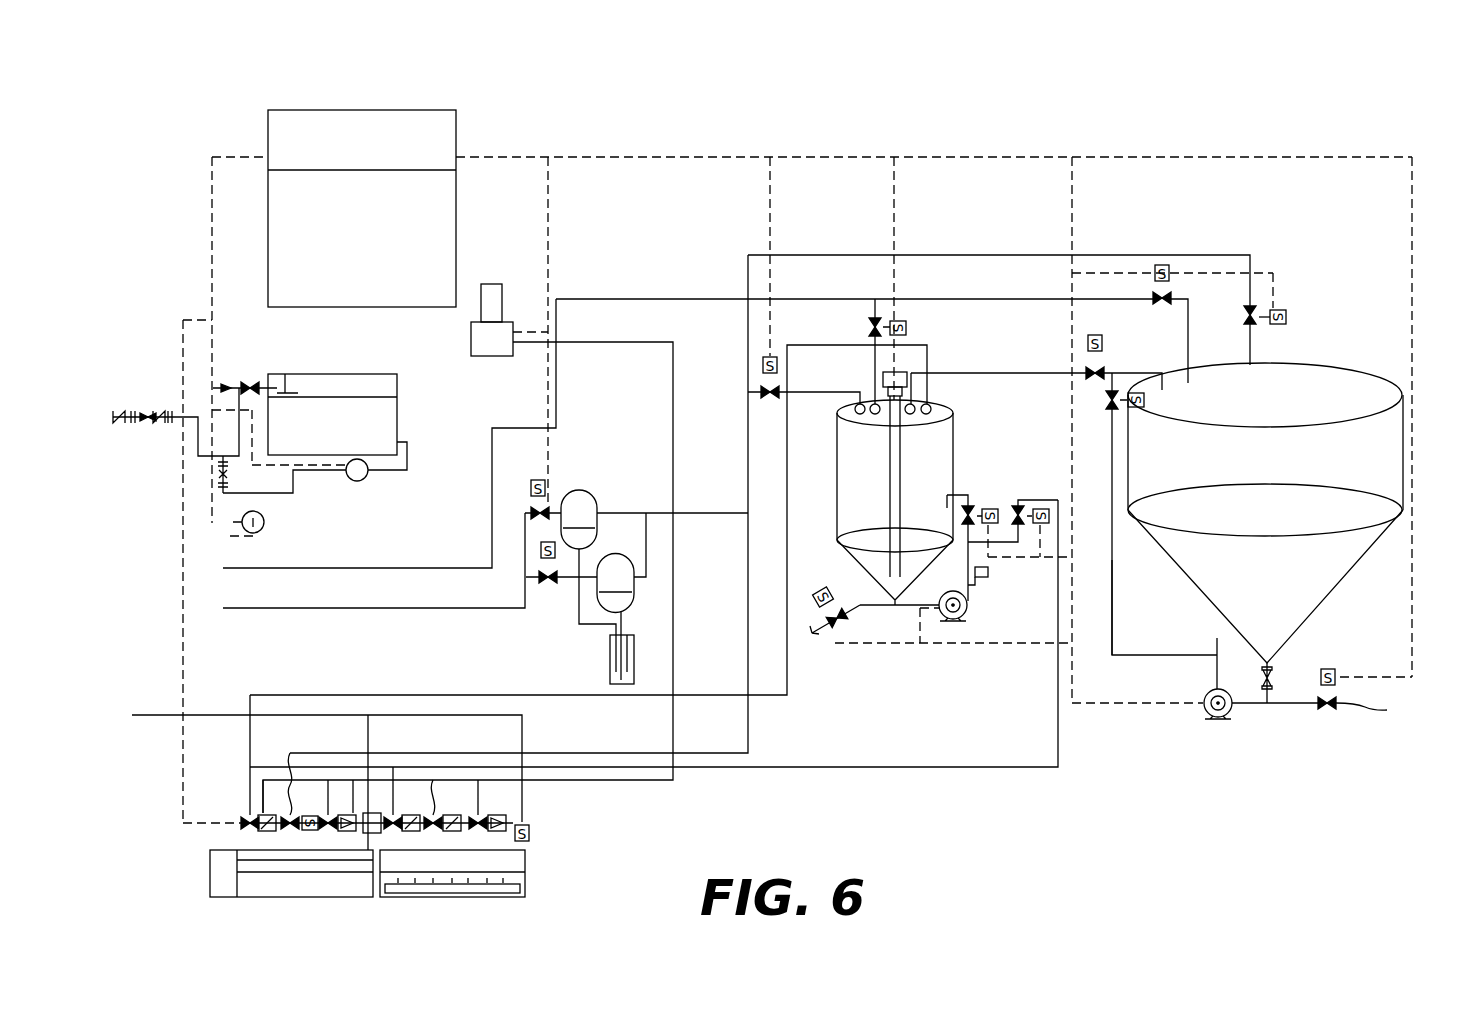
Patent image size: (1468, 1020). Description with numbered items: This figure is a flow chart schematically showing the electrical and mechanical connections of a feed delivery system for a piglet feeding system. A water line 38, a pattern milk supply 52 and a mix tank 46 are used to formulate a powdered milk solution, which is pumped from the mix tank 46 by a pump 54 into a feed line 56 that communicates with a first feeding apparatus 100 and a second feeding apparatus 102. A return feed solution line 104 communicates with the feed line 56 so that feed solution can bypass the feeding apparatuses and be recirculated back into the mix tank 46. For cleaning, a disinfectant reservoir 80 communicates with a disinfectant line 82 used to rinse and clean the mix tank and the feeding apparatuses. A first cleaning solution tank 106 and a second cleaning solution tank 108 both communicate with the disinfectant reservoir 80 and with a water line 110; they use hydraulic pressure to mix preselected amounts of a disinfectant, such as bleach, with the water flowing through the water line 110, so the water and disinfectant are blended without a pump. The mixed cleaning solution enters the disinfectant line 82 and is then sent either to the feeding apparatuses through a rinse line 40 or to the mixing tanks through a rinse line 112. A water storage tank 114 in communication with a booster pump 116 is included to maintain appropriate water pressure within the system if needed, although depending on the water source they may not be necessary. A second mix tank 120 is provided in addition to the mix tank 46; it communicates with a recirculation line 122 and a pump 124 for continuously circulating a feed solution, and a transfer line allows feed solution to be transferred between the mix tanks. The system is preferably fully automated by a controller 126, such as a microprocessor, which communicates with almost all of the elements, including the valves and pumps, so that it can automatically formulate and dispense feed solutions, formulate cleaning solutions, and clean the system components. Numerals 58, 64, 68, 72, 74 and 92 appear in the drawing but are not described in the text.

The water line 38 is at (630, 298).
The rinse line 40 is at (748, 586).
The mix tank 46 is at (940, 442).
The pattern milk supply 52 is at (907, 376).
The pump 54 is at (950, 621).
The feed line 56 is at (752, 768).
The valve assembly 58 is at (958, 495).
The valve 64 is at (810, 393).
The drain valve 68 is at (860, 606).
The chemical feed manifold 72 is at (250, 803).
The chemical feed manifold 74 is at (394, 795).
The disinfectant reservoir 80 is at (610, 660).
The disinfectant line 82 is at (700, 513).
The line 92 is at (603, 342).
The first feeding apparatus 100 is at (237, 873).
The second feeding apparatus 102 is at (525, 866).
The return feed solution line 104 is at (330, 695).
The first cleaning solution tank 106 is at (585, 490).
The second cleaning solution tank 108 is at (640, 600).
The water line 110 is at (430, 610).
The rinse line 112 is at (748, 406).
The water storage tank 114 is at (399, 410).
The booster pump 116 is at (364, 480).
The second mix tank 120 is at (1395, 452).
The recirculation line 122 is at (1113, 588).
The pump 124 is at (1022, 373).
The controller 126 is at (372, 110).